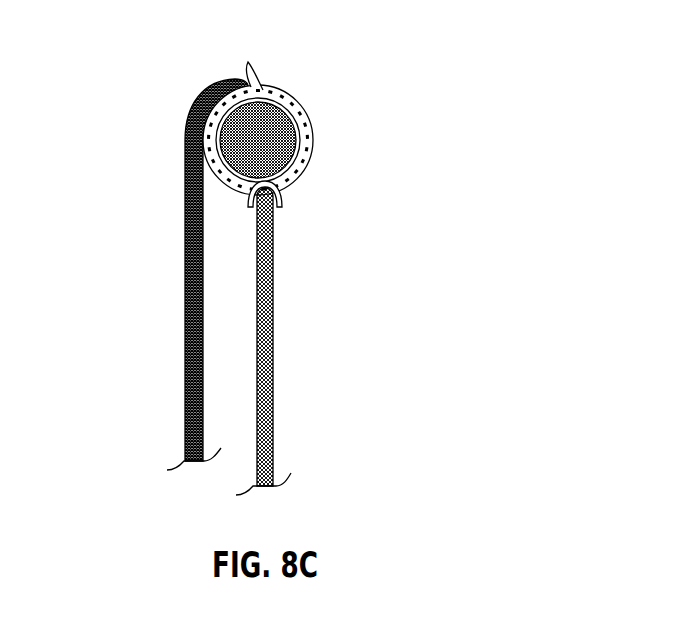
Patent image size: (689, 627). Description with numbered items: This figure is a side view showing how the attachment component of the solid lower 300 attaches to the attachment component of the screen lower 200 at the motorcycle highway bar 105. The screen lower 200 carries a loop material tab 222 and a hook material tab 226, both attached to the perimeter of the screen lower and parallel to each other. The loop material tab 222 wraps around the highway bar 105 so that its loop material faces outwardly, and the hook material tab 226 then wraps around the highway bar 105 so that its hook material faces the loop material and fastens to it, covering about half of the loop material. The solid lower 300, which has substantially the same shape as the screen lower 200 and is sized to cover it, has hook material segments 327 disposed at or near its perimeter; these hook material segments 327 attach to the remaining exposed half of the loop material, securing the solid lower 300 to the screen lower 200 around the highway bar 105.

The motorcycle highway bar 105 is at (241, 154).
The screen lower 200 is at (272, 332).
The loop material tab 222 is at (232, 183).
The hook material tab 226 is at (308, 113).
The solid lower 300 is at (187, 312).
The hook material segments 327 is at (246, 87).